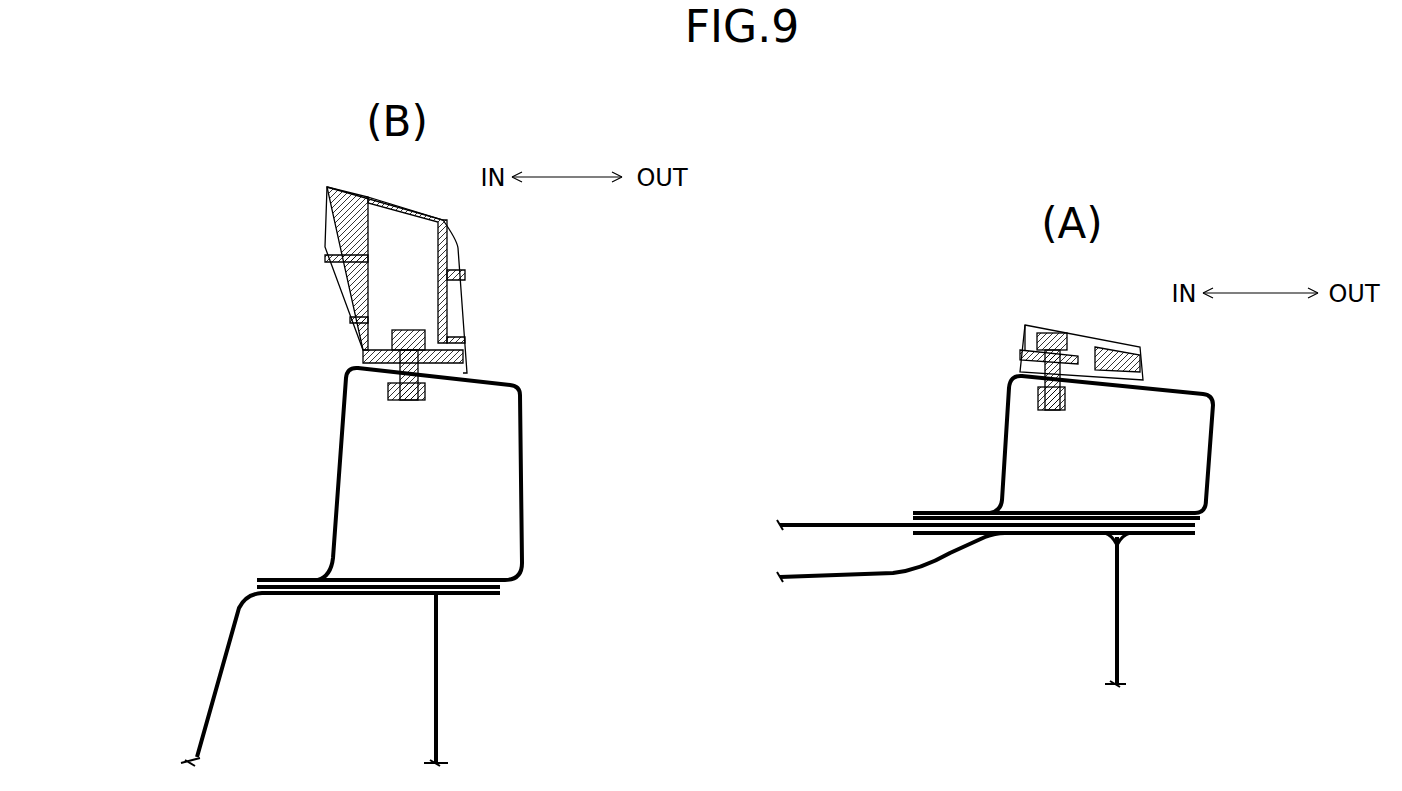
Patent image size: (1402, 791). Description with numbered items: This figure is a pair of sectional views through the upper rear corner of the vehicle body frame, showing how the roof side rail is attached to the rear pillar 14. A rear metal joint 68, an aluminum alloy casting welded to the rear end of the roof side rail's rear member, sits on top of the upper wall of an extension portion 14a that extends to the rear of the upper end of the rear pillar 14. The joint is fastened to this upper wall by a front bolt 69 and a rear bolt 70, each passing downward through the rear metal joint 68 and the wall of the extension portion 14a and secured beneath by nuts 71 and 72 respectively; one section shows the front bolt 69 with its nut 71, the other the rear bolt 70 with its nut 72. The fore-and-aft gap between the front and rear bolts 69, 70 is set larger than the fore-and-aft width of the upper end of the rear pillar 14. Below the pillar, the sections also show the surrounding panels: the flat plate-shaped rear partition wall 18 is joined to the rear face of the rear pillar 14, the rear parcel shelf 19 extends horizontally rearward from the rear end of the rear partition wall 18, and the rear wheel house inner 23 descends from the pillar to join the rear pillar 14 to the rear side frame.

The rear pillar 14 is at (527, 486).
The extension portion 14a is at (1220, 461).
The rear partition wall 18 is at (213, 681).
The rear parcel shelf 19 is at (851, 522).
The rear wheel house inner 23 is at (442, 686).
The rear metal joint 68 is at (455, 312).
The front bolt 69 is at (413, 330).
The rear bolt 70 is at (1053, 335).
The nut 71 is at (423, 397).
The nut 72 is at (1070, 398).